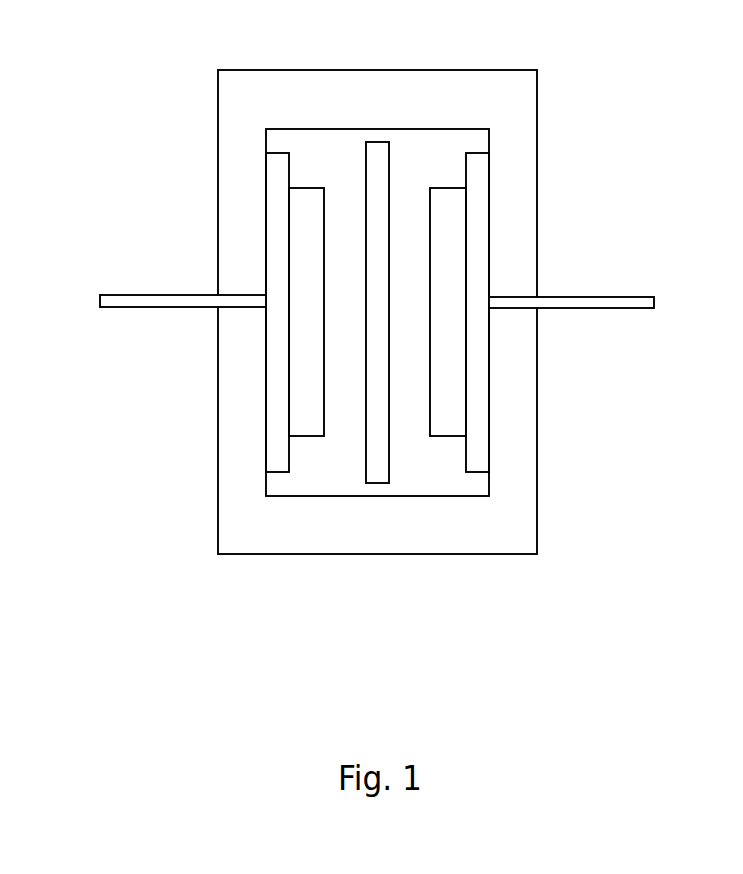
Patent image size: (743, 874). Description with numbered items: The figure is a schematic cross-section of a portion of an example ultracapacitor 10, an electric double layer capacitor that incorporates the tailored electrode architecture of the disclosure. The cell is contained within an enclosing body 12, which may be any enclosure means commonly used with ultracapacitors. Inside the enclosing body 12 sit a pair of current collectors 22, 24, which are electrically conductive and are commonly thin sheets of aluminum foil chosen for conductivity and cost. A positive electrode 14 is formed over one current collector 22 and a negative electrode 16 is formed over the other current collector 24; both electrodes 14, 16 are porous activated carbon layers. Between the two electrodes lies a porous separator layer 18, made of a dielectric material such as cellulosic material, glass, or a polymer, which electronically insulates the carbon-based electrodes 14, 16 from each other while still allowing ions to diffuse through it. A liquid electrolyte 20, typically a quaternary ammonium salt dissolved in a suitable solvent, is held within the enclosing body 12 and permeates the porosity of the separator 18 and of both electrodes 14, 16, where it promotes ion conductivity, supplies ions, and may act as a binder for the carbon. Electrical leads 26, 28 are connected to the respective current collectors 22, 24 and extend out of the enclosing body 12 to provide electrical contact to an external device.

The ultracapacitor 10 is at (375, 320).
The enclosing body 12 is at (501, 531).
The positive electrode 14 is at (313, 424).
The negative electrode 16 is at (450, 424).
The porous separator layer 18 is at (377, 153).
The liquid electrolyte 20 is at (448, 176).
The current collector 22 is at (278, 213).
The current collector 24 is at (474, 217).
The electrical lead 26 is at (137, 301).
The electrical lead 28 is at (623, 303).